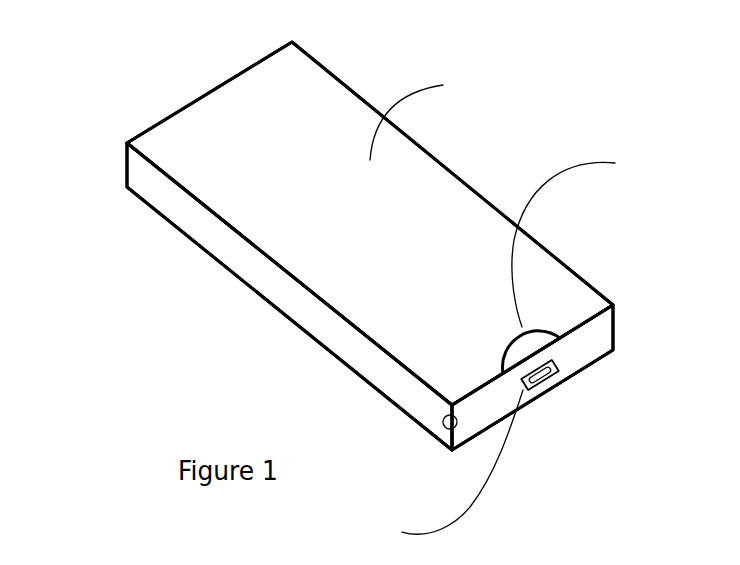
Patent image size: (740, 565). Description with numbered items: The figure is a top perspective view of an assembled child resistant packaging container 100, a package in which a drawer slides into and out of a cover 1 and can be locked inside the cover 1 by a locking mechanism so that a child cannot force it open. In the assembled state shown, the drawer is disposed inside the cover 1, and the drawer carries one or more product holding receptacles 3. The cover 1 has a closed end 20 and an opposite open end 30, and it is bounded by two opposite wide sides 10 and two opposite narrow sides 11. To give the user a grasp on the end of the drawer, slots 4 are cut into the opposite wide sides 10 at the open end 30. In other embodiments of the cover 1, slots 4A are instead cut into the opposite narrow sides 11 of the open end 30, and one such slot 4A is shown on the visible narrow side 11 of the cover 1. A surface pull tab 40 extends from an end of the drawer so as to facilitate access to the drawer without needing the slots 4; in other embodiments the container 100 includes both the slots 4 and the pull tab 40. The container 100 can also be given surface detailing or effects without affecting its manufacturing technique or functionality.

The child resistant packaging container 100 is at (163, 83).
The wide sides 10 is at (270, 177).
The closed end 20 is at (240, 72).
The narrow sides 11 is at (235, 248).
The open end 30 is at (587, 370).
The surface pull tab 40 is at (547, 382).
The slots 4A is at (443, 421).
The cover 1 is at (415, 119).
The product holding receptacles 3 is at (448, 462).
The slots 4 is at (575, 239).